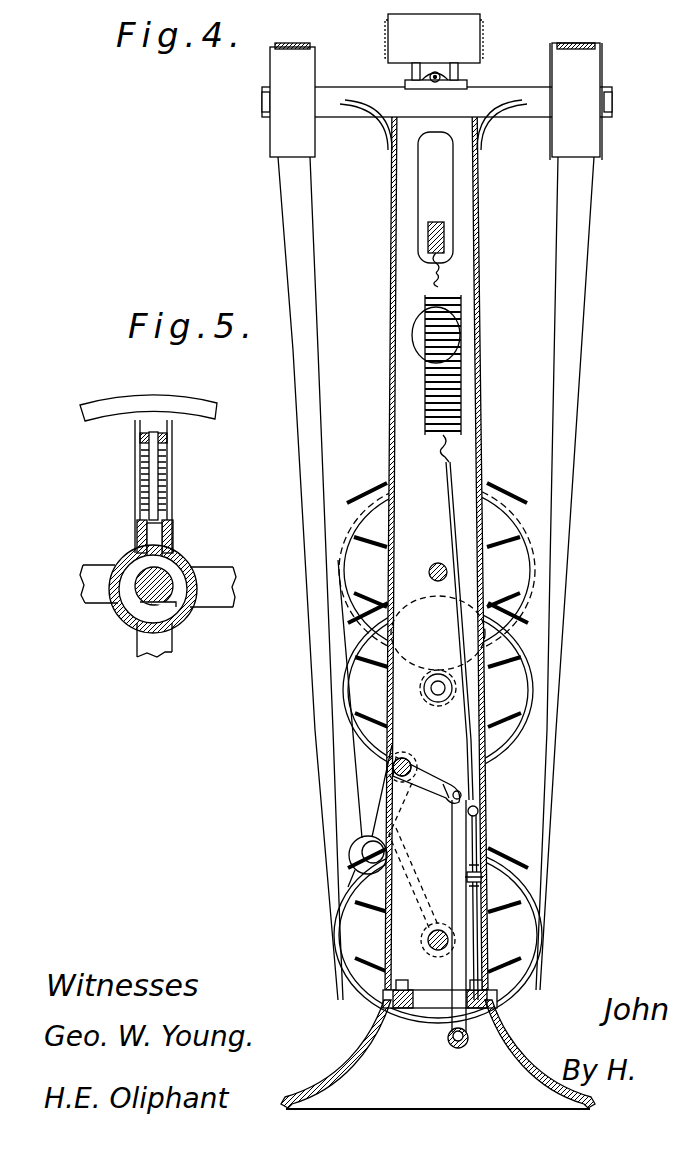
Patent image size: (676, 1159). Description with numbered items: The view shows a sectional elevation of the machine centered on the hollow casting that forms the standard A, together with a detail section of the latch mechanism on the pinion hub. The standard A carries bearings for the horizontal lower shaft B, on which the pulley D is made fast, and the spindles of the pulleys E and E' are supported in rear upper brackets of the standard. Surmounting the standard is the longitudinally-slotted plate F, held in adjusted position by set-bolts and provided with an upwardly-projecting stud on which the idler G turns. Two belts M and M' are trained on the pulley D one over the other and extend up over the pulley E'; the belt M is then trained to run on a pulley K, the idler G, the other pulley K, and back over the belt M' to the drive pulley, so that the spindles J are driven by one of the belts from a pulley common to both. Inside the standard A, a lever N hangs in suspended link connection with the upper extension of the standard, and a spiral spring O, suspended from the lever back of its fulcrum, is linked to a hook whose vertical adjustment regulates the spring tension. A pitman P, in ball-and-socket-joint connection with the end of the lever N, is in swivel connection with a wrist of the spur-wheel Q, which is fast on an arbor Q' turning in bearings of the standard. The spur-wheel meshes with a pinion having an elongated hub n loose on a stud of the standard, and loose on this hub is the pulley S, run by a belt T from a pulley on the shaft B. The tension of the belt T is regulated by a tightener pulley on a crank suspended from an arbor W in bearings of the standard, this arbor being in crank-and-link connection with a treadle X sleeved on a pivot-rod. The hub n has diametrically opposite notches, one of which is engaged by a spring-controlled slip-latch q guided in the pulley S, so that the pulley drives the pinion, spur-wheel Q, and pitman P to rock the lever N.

In FIG. 4, the idler G is at (434, 38).
In FIG. 4, the pulley E is at (292, 100).
In FIG. 4, the pulley E' is at (576, 101).
In FIG. 4, the longitudinally-slotted plate F is at (460, 82).
In FIG. 4, the standard A is at (390, 423).
In FIG. 4, the lever N is at (445, 235).
In FIG. 4, the spiral spring O is at (461, 376).
In FIG. 4, the spur-wheel Q is at (468, 570).
In FIG. 4, the arbor Q' is at (428, 551).
In FIG. 4, the pitman P is at (438, 671).
In FIG. 4, the pulley S is at (528, 690).
In FIG. 5, the pulley S is at (92, 433).
In FIG. 4, the arbor W is at (412, 760).
In FIG. 4, the belt T is at (368, 778).
In FIG. 4, the spindles J is at (466, 831).
In FIG. 4, the pulley K is at (483, 876).
In FIG. 4, the horizontal lower shaft B is at (434, 922).
In FIG. 4, the pulley D is at (345, 965).
In FIG. 4, the treadle X is at (450, 1042).
In FIG. 4, the belt M is at (437, 443).
In FIG. 4, the belt M' is at (425, 865).
In FIG. 5, the spring-controlled slip-latch q is at (157, 533).
In FIG. 5, the elongated hub n is at (175, 572).